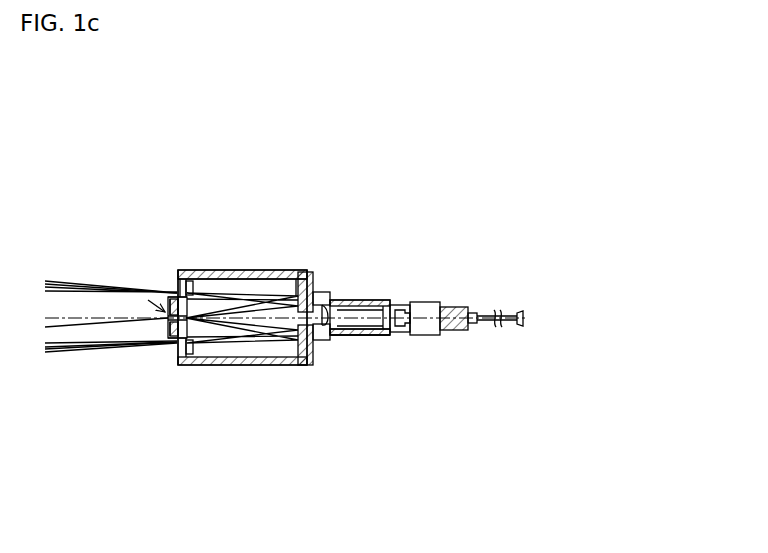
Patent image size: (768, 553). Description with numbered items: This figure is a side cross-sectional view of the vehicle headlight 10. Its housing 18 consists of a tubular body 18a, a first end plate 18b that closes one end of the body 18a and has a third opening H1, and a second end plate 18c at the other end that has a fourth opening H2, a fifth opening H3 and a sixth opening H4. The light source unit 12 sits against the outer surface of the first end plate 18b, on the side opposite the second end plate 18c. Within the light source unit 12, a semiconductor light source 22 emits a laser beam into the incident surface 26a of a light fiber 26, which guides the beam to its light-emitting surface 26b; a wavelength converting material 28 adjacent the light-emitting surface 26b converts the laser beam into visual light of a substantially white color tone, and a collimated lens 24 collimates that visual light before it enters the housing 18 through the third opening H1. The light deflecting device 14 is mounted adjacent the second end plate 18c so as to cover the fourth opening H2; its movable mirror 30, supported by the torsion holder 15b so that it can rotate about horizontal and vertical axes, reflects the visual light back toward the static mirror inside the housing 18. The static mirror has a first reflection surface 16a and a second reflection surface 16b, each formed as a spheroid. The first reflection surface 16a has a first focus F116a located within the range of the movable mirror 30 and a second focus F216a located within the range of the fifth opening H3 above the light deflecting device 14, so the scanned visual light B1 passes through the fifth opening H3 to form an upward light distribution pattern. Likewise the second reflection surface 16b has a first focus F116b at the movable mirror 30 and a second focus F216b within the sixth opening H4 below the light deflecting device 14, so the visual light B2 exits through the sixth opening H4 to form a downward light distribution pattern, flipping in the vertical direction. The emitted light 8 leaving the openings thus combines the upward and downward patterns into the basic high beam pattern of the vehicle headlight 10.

The vehicle headlight 10 is at (217, 173).
The housing 18 is at (251, 268).
The body 18a is at (217, 271).
The first end plate 18b is at (314, 290).
The second end plate 18c is at (176, 271).
The third opening H1 is at (281, 271).
The fourth opening H2 is at (183, 271).
The fifth opening H3 is at (172, 296).
The sixth opening H4 is at (172, 340).
The movable mirror 30 is at (188, 333).
The first reflection surface 16a is at (297, 298).
The second reflection surface 16b is at (304, 350).
The first focus F116a is at (164, 399).
The first focus F116b is at (236, 411).
The second focus F216a is at (170, 299).
The second focus F216b is at (170, 339).
The measurement light 8 is at (92, 307).
The visual light B1 is at (96, 282).
The visual light B2 is at (72, 351).
The torsion holder 15b is at (89, 329).
The light deflecting device 14 is at (148, 300).
The collimated lens 24 is at (333, 298).
The light source unit 12 is at (397, 298).
The light fiber 26 is at (478, 307).
The incident surface 26a is at (513, 323).
The light-emitting surface 26b is at (373, 335).
The wavelength converting material 28 is at (369, 386).
The semiconductor light source 22 is at (521, 311).